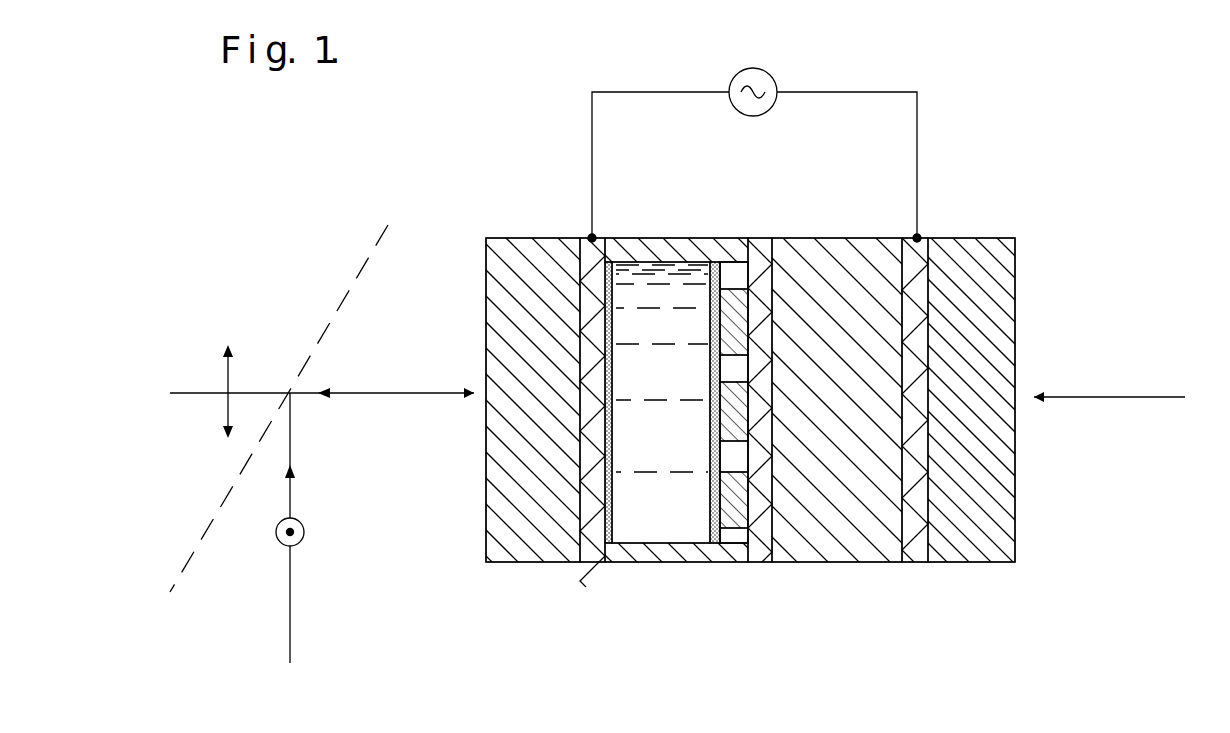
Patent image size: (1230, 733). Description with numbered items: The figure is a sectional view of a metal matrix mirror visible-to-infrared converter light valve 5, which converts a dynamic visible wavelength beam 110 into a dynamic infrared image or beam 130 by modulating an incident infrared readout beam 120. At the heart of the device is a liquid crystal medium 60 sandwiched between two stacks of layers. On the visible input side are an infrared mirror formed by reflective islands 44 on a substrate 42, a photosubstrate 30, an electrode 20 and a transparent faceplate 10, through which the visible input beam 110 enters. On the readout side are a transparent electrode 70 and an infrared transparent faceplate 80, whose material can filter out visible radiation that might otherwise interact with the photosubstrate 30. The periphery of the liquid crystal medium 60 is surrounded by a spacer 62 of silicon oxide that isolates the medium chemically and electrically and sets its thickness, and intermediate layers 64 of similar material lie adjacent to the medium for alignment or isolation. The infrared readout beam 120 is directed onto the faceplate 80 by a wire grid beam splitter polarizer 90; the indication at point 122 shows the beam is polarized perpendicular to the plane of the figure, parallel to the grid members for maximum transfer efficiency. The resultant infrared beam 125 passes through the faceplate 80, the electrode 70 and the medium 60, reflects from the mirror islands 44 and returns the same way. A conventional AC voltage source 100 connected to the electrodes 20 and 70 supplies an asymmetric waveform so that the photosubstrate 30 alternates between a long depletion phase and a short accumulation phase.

The light valve 5 is at (960, 189).
The transparent faceplate 10 is at (1006, 501).
The electrode 20 is at (915, 553).
The photosubstrate 30 is at (830, 552).
The substrate 42 is at (760, 553).
The reflective islands 44 is at (733, 293).
The liquid crystal medium 60 is at (669, 450).
The spacer 62 is at (664, 239).
The intermediate layers 64 is at (607, 316).
The transparent electrode 70 is at (588, 552).
The infrared transparent faceplate 80 is at (521, 239).
The wire grid beam splitter polarizer 90 is at (356, 277).
The AC voltage source 100 is at (770, 75).
The visible wavelength input image beam 110 is at (1105, 394).
The infrared readout beam 120 is at (291, 619).
The polarization indication point 122 is at (276, 538).
The resultant infrared beam 125 is at (388, 393).
The dynamic infrared image or beam 130 is at (228, 380).